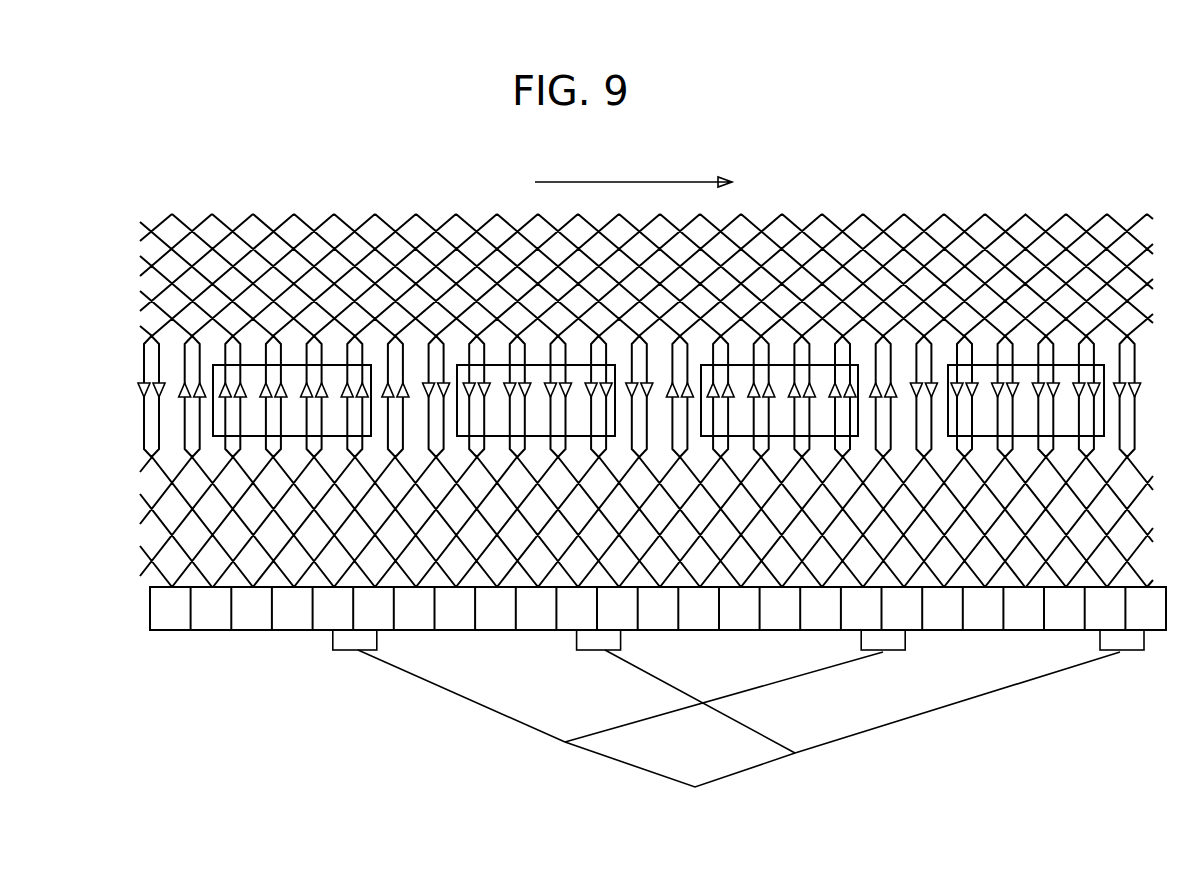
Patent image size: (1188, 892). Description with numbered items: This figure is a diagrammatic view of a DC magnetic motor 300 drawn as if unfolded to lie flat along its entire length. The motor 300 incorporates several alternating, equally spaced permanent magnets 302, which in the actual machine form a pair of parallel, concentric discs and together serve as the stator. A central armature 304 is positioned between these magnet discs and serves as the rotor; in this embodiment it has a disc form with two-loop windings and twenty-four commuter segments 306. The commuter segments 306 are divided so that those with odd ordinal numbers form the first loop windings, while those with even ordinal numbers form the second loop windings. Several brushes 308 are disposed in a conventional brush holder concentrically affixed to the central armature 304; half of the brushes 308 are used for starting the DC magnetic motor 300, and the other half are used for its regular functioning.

The DC magnetic motor 300 is at (357, 98).
The permanent magnets 302 is at (783, 375).
The central armature 304 is at (299, 514).
The commuter segments 306 is at (299, 630).
The brushes 308 is at (738, 728).